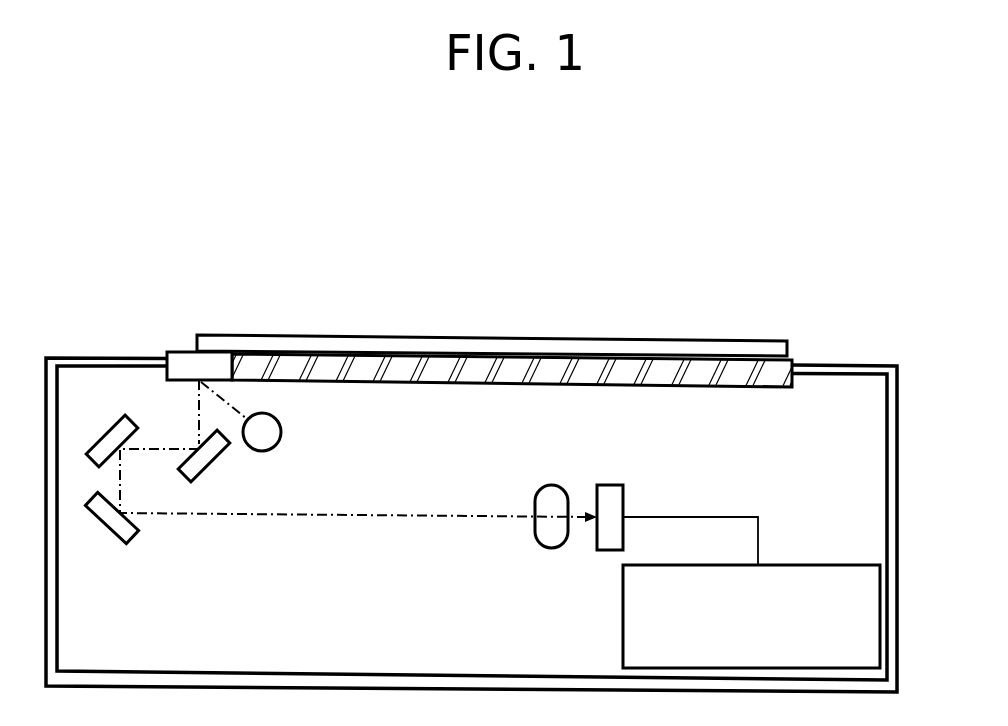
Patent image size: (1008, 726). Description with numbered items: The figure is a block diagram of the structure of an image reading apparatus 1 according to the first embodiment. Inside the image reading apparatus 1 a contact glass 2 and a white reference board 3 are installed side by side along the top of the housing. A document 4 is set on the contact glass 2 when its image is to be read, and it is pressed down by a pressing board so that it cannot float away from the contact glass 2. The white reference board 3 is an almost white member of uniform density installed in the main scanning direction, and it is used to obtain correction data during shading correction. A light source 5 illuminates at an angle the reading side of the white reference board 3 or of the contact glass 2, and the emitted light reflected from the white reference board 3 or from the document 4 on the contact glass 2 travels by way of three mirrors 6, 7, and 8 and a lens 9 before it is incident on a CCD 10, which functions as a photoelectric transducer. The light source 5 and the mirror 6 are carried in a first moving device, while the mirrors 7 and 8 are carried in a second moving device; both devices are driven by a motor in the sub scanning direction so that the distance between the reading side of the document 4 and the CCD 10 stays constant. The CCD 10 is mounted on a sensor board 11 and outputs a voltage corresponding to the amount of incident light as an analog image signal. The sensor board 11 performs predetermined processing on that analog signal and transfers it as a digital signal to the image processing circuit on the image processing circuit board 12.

The image reading apparatus 1 is at (779, 273).
The contact glass 2 is at (702, 341).
The white reference board 3 is at (176, 352).
The document 4 is at (552, 341).
The light source 5 is at (283, 435).
The mirror 6 is at (213, 472).
The mirror 7 is at (105, 434).
The mirror 8 is at (112, 530).
The lens 9 is at (540, 548).
The CCD 10 is at (594, 546).
The sensor board 11 is at (613, 519).
The image processing circuit board 12 is at (815, 559).